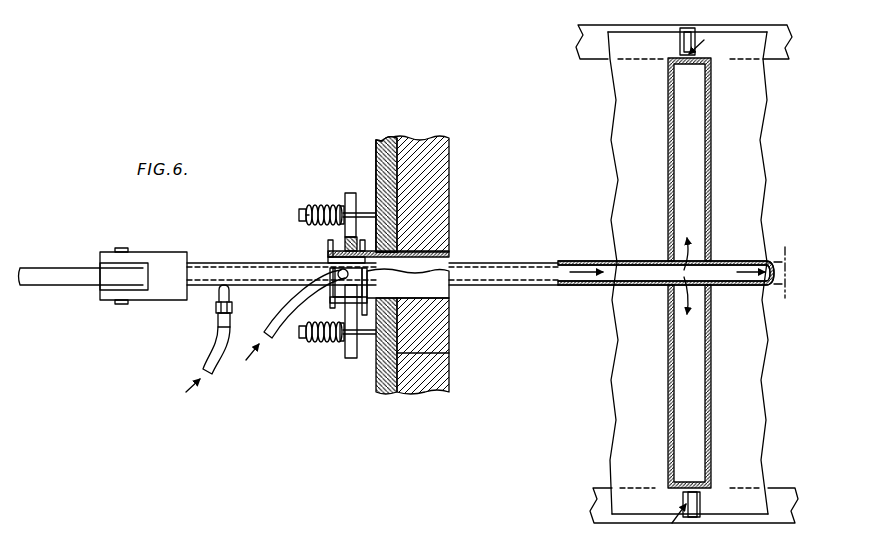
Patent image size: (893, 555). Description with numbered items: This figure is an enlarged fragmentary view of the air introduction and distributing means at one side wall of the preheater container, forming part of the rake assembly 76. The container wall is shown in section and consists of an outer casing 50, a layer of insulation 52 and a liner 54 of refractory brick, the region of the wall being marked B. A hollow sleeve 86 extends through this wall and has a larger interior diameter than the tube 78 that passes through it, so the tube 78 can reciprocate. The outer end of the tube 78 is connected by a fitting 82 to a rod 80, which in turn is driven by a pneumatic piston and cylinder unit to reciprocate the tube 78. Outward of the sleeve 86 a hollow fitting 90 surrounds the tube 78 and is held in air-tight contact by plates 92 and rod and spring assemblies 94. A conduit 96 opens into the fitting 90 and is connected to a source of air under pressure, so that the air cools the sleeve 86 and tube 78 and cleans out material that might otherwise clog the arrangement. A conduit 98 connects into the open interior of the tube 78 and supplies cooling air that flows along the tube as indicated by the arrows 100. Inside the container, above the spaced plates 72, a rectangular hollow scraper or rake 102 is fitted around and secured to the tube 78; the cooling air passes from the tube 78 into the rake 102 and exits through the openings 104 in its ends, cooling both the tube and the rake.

The outer casing 50 is at (377, 372).
The layer of insulation 52 is at (398, 390).
The liner 54 is at (450, 368).
The spaced plates 72 is at (620, 142).
The rake assembly 76 is at (265, 261).
The tube 78 is at (526, 263).
The rod 80 is at (70, 266).
The fitting 82 is at (170, 255).
The hollow sleeve 86 is at (443, 292).
The hollow fitting 90 is at (327, 246).
The plate 92 is at (349, 192).
The rod and spring assembly 94 is at (305, 212).
The conduit 96 is at (292, 311).
The conduit 98 is at (212, 347).
The arrows indicating air flow 100 is at (637, 270).
The scraper or rake 102 is at (669, 400).
The opening 104 is at (688, 58).
The wall B is at (374, 137).